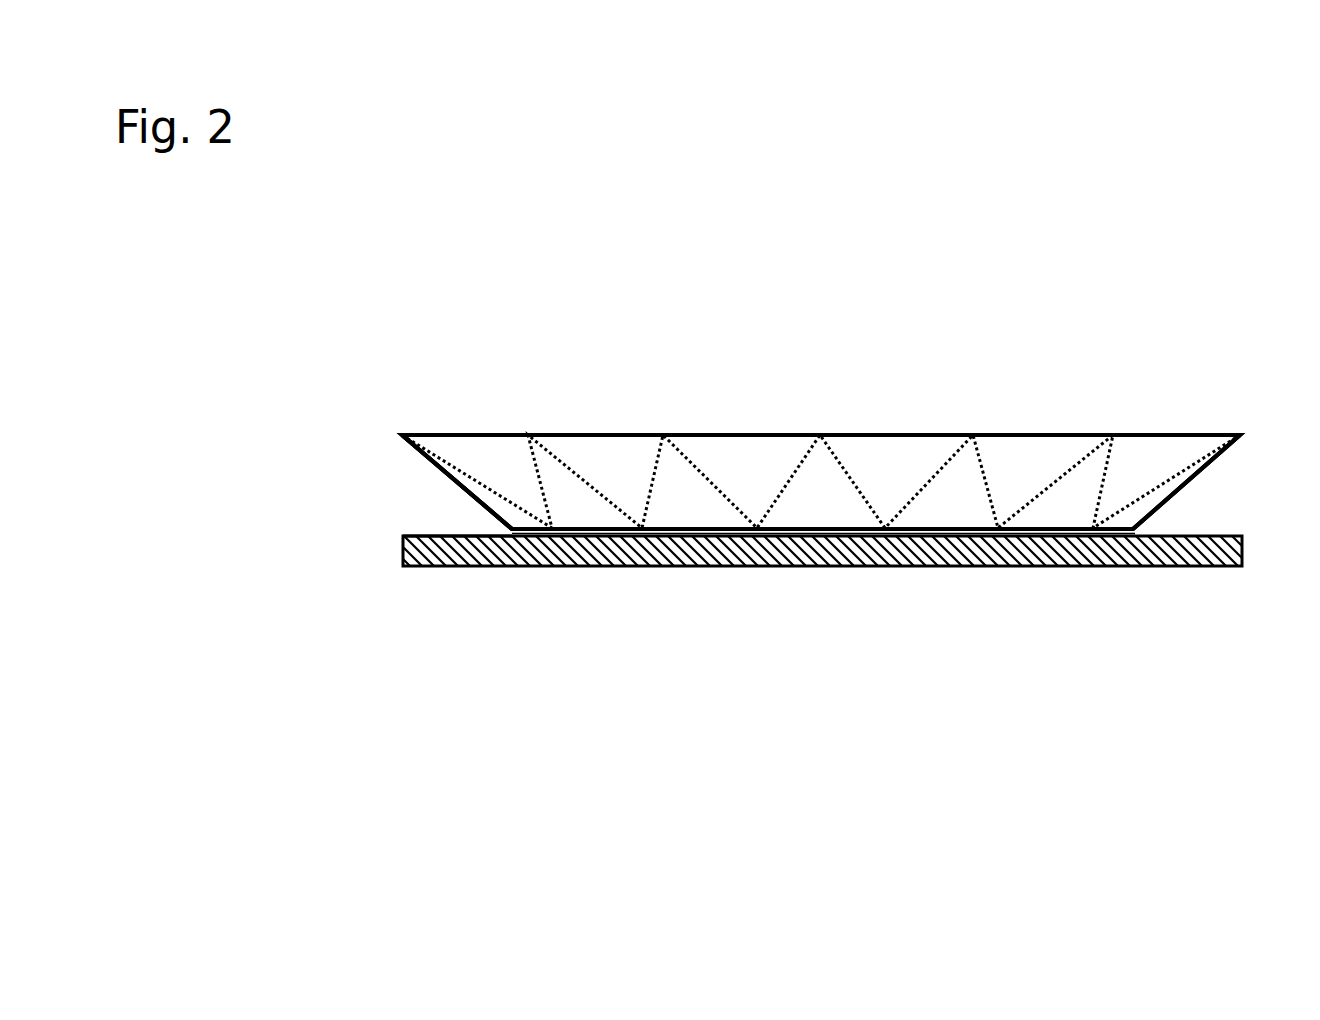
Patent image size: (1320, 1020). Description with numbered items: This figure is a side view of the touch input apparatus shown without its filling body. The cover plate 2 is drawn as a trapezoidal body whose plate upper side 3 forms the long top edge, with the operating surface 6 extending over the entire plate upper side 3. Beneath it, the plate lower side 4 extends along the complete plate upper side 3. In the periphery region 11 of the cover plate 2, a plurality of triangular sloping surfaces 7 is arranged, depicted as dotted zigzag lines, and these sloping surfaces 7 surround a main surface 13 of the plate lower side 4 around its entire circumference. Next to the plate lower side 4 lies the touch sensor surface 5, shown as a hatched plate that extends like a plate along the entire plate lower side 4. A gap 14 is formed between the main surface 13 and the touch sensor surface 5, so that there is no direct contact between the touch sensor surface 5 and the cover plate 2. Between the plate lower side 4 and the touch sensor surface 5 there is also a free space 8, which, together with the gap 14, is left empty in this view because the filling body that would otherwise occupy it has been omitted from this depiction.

The cover plate 2 is at (355, 480).
The plate upper side 3 is at (910, 433).
The plate lower side 4 is at (484, 520).
The touch sensor surface 5 is at (793, 553).
The operating surface 6 is at (592, 433).
The triangular sloping surfaces 7 is at (458, 487).
The free space 8 is at (417, 517).
The periphery region 11 is at (447, 391).
The main surface 13 is at (921, 537).
The gap 14 is at (1140, 529).